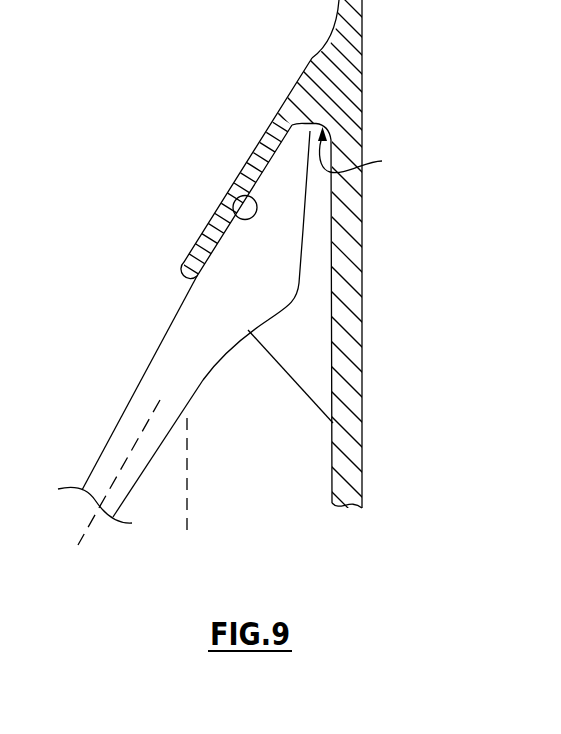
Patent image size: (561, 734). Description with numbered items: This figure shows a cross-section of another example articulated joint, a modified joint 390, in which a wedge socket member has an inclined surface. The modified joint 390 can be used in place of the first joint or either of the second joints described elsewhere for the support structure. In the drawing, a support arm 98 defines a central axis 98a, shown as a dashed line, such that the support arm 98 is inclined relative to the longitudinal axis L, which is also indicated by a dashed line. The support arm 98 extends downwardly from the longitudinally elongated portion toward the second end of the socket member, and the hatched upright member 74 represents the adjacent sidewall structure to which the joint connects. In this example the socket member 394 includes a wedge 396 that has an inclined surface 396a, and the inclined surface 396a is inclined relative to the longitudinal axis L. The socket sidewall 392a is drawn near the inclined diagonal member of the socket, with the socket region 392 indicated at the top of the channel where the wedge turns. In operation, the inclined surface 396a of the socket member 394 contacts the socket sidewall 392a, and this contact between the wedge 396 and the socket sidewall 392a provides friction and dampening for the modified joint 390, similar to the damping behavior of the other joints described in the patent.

The wall 74 is at (363, 205).
The support arm 98 is at (126, 432).
The central axis 98a is at (90, 525).
The modified joint 390 is at (280, 289).
The upper passage turn 392 is at (369, 151).
The socket sidewall 392a is at (236, 201).
The socket member 394 is at (300, 253).
The wedge 396 is at (273, 293).
The inclined surface 396a is at (251, 155).
The longitudinal axis L is at (187, 472).